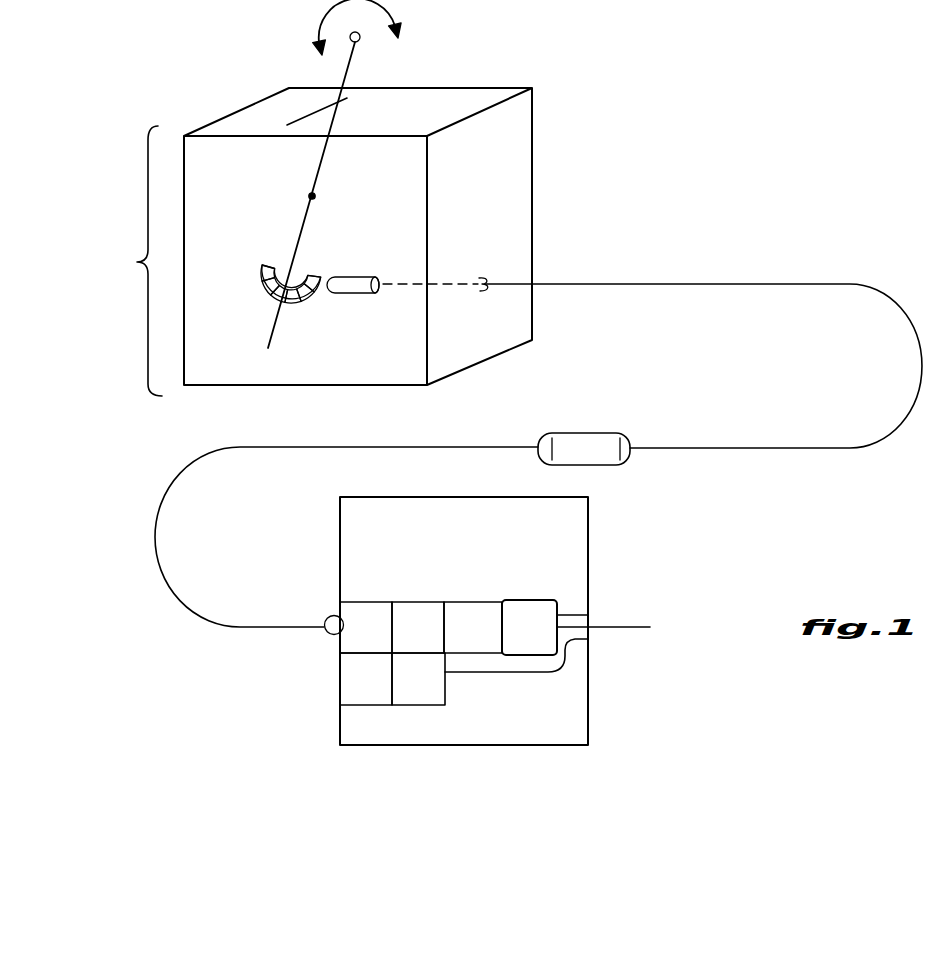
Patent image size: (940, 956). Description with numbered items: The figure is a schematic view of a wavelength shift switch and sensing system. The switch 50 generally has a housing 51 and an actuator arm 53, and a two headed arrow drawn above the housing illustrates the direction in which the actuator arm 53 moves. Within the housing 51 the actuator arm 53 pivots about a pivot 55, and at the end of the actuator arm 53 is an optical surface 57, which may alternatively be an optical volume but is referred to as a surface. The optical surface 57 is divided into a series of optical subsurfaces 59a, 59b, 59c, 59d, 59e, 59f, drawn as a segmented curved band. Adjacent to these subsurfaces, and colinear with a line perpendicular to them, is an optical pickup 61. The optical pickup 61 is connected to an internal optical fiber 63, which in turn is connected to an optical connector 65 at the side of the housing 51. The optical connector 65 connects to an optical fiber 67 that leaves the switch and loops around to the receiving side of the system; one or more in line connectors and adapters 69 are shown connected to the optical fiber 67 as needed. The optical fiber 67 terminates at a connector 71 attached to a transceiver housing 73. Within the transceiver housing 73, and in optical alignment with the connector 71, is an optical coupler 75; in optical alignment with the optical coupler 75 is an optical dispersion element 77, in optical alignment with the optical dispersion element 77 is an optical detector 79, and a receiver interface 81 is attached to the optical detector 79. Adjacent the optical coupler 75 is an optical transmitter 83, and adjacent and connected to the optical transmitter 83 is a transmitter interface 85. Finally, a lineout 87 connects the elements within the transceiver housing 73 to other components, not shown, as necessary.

The switch 50 is at (127, 261).
The housing 51 is at (532, 139).
The actuator arm 53 is at (345, 77).
The pivot 55 is at (342, 187).
The optical surface 57 is at (272, 262).
The optical subsurface 59a is at (262, 265).
The optical subsurface 59b is at (268, 283).
The optical subsurface 59c is at (274, 302).
The optical subsurface 59d is at (267, 333).
The optical subsurface 59e is at (302, 303).
The optical subsurface 59f is at (318, 295).
The optical pickup 61 is at (365, 277).
The internal optical fiber 63 is at (449, 282).
The optical connector 65 is at (490, 291).
The optical fiber 67 is at (663, 285).
The in line connectors and adapters 69 is at (607, 408).
The connector 71 is at (327, 632).
The transceiver housing 73 is at (340, 731).
The optical coupler 75 is at (363, 607).
The optical dispersion element 77 is at (412, 607).
The optical detector 79 is at (466, 605).
The receiver interface 81 is at (536, 605).
The optical transmitter 83 is at (375, 697).
The transmitter interface 85 is at (432, 697).
The lineout 87 is at (640, 629).